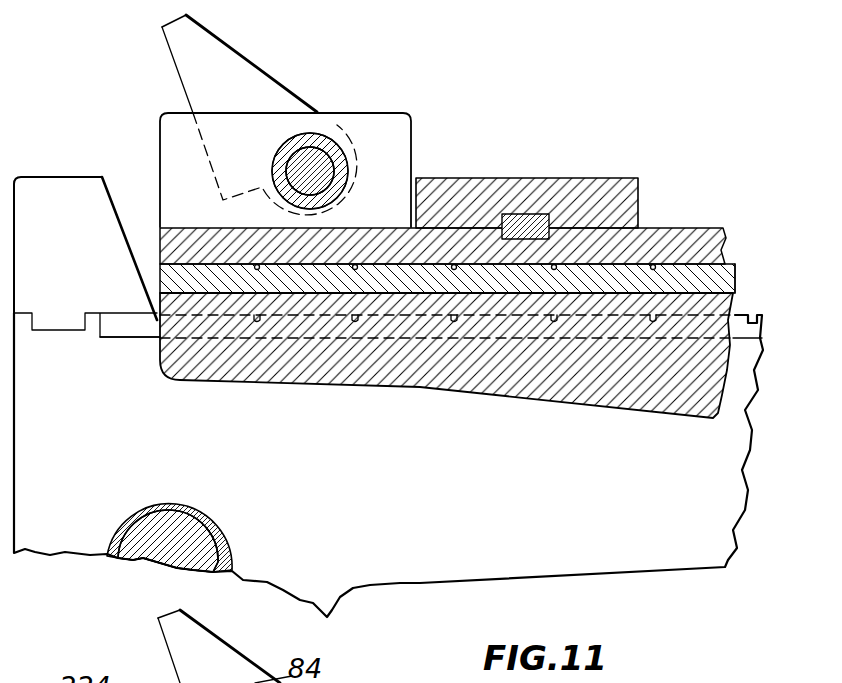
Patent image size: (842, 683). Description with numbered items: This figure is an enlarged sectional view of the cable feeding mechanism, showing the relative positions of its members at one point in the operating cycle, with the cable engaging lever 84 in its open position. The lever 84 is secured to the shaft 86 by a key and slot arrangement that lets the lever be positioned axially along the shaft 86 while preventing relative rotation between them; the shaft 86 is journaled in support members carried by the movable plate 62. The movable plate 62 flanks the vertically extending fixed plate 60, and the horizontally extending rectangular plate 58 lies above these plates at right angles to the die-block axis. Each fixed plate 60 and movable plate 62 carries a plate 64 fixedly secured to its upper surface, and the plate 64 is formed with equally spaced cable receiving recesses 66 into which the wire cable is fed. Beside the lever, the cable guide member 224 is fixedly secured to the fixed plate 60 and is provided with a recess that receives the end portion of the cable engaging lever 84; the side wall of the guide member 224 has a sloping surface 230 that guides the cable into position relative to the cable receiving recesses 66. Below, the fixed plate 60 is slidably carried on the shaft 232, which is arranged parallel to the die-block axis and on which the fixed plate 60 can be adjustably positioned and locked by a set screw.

The rectangular plate 58 is at (657, 240).
The fixed plate 60 is at (412, 573).
The movable plate 62 is at (333, 370).
The plate 64 is at (725, 278).
The cable receiving recess 66 is at (655, 267).
The cable engaging lever 84 is at (237, 77).
The shaft 86 is at (315, 167).
The cable guide member 224 is at (63, 190).
The sloping surface 230 is at (119, 208).
The shaft 232 is at (193, 532).